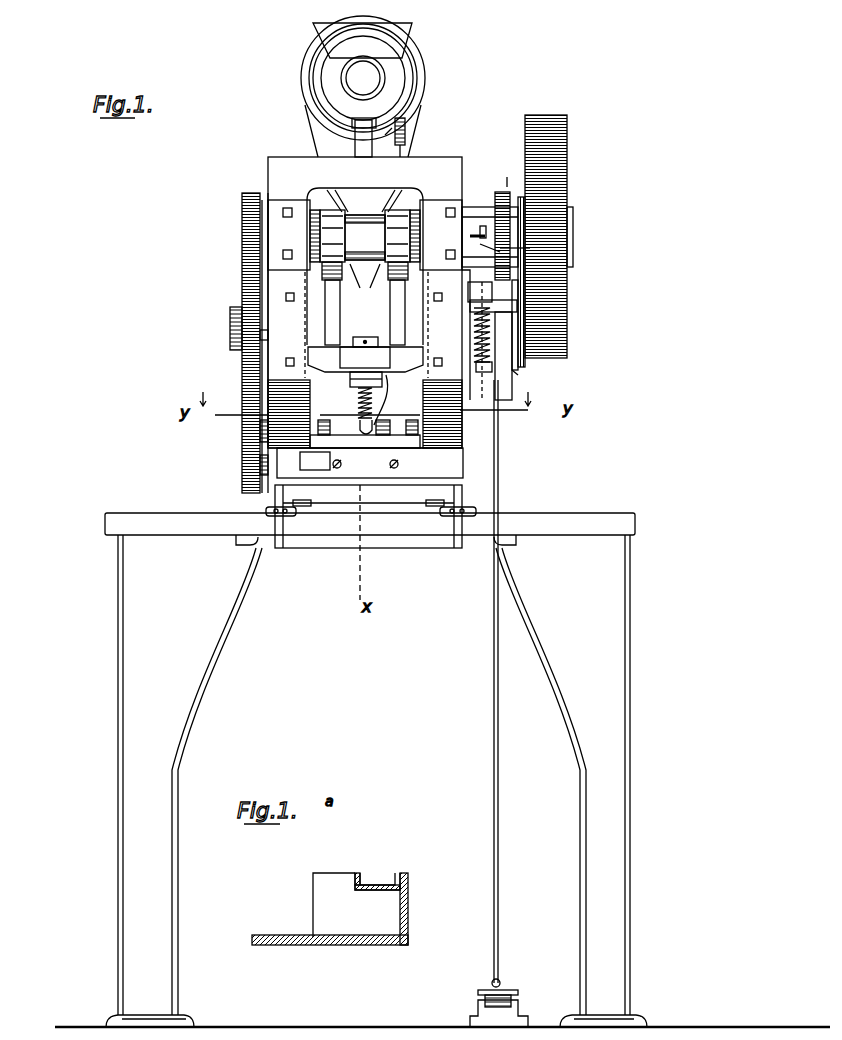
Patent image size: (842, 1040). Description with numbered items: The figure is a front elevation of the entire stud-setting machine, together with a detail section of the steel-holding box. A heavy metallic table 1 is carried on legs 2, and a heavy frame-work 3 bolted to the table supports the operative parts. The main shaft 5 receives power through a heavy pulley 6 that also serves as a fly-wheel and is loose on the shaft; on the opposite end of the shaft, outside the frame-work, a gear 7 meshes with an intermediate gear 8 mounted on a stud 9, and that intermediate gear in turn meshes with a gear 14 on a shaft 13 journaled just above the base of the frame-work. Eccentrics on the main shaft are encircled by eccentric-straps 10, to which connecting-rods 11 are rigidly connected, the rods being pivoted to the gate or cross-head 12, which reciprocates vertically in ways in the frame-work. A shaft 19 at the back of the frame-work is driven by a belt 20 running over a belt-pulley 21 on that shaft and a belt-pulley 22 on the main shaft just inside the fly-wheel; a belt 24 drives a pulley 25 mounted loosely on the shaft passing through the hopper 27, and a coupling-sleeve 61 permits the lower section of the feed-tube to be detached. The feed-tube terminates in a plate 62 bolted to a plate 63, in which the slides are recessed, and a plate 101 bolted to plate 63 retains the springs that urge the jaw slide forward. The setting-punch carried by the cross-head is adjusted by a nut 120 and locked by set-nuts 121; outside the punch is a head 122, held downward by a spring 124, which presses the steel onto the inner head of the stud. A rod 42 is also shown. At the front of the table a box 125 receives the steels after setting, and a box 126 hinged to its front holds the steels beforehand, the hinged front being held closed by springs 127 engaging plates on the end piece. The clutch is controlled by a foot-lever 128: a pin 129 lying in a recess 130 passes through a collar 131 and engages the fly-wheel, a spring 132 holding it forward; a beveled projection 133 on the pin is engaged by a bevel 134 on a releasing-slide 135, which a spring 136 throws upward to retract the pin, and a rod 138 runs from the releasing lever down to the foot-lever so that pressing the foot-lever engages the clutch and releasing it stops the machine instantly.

In FIG. 1, the table 1 is at (528, 514).
In FIG. 1, the legs 2 is at (184, 781).
In FIG. 1, the frame-work 3 is at (365, 276).
In FIG. 1, the main shaft 5 is at (431, 237).
In FIG. 1, the pulley 6 is at (566, 185).
In FIG. 1, the gear 7 is at (240, 260).
In FIG. 1, the intermediate gear 8 is at (242, 370).
In FIG. 1, the stud 9 is at (265, 336).
In FIG. 1, the eccentric-straps 10 is at (327, 236).
In FIG. 1, the connecting-rods 11 is at (392, 300).
In FIG. 1, the gate or cross-head 12 is at (365, 358).
In FIG. 1, the shaft 13 is at (262, 470).
In FIG. 1, the gear 14 is at (242, 437).
In FIG. 1, the shaft 19 is at (490, 335).
In FIG. 1, the belt 20 is at (522, 232).
In FIG. 1, the belt-pulley 21 is at (520, 370).
In FIG. 1, the belt-pulley 22 is at (512, 208).
In FIG. 1, the belt 24 is at (408, 136).
In FIG. 1, the pulley 25 is at (420, 80).
In FIG. 1, the hopper 27 is at (362, 40).
In FIG. 1, the rod 42 is at (398, 205).
In FIG. 1, the coupling-sleeve 61 is at (383, 168).
In FIG. 1, the plate 62 is at (384, 436).
In FIG. 1, the plate 63 is at (315, 463).
In FIG. 1, the plate 101 is at (370, 446).
In FIG. 1, the nut 120 is at (380, 343).
In FIG. 1, the set-nuts 121 is at (352, 380).
In FIG. 1, the head 122 is at (360, 421).
In FIG. 1, the spring 124 is at (358, 400).
In FIG. 1, the box 125 is at (362, 552).
In FIG. 1A, the box 125 is at (330, 909).
In FIG. 1A, the box 126 is at (380, 884).
In FIG. 1, the springs 127 is at (270, 516).
In FIG. 1, the foot-lever 128 is at (512, 990).
In FIG. 1, the pin 129 is at (482, 226).
In FIG. 1, the recess 130 is at (470, 238).
In FIG. 1, the collar 131 is at (507, 168).
In FIG. 1, the spring 132 is at (484, 247).
In FIG. 1, the beveled projection 133 is at (529, 249).
In FIG. 1, the bevel 134 is at (480, 280).
In FIG. 1, the releasing-slide 135 is at (474, 333).
In FIG. 1, the spring 136 is at (490, 364).
In FIG. 1, the rod 138 is at (494, 668).